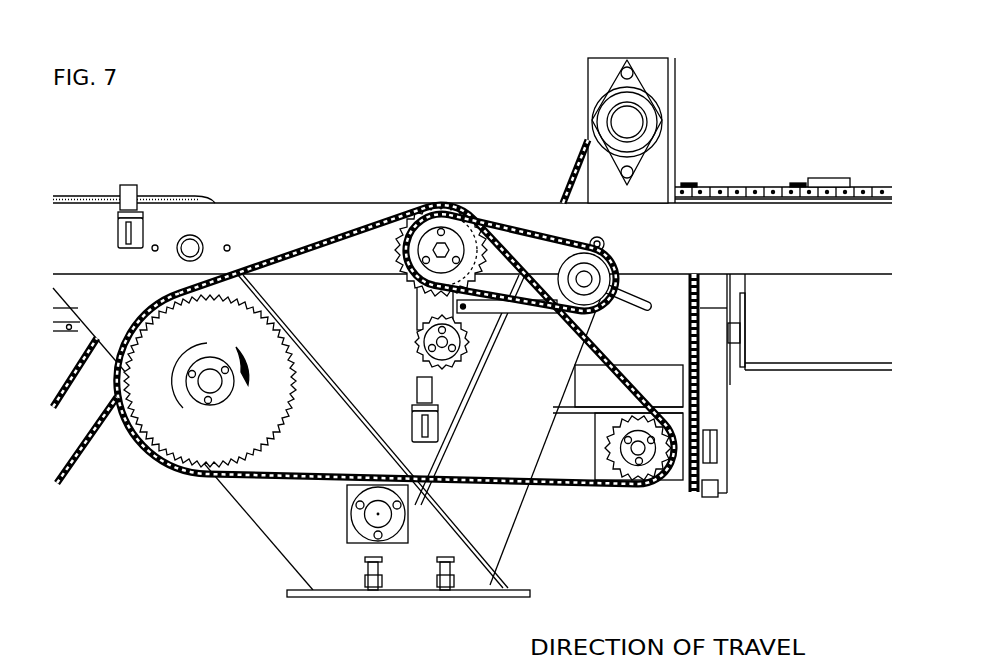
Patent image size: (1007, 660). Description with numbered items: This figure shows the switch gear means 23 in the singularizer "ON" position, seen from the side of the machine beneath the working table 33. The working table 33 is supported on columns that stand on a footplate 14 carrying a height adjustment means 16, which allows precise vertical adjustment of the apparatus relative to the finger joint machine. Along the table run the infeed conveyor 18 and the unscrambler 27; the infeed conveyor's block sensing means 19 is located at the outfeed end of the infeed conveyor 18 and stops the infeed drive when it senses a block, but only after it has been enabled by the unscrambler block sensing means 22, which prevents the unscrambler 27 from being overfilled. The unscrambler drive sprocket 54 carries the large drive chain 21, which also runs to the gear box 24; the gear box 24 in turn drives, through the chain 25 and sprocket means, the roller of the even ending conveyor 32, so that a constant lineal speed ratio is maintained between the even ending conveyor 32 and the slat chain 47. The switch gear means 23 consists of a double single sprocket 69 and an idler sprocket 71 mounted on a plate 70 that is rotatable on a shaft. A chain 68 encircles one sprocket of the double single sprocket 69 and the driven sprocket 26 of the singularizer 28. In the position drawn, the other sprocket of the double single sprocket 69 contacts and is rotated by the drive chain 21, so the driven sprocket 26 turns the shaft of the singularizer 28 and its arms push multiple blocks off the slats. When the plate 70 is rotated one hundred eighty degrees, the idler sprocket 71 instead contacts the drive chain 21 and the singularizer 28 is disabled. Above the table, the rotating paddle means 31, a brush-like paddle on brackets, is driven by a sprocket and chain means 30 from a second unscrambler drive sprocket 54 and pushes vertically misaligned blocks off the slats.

The footplate 14 is at (287, 600).
The height adjustment means 16 is at (367, 590).
The infeed conveyor 18 is at (88, 194).
The infeed conveyor's block sensing means 19 is at (142, 182).
The drive chain 21 is at (273, 483).
The unscrambler block sensing means 22 is at (413, 395).
The switch gear means 23 is at (438, 200).
The gear box 24 is at (670, 487).
The chain 25 is at (703, 393).
The driven sprocket 26 is at (580, 262).
The unscrambler 27 is at (318, 200).
The singularizer 28 is at (652, 302).
The chain 30 is at (568, 168).
The rotating paddle means 31 is at (583, 123).
The even ending conveyor 32 is at (840, 332).
The working table 33 is at (840, 236).
The slat chain 47 is at (827, 187).
The unscrambler drive sprocket 54 is at (223, 439).
The chain 68 is at (520, 227).
The double single sprocket 69 is at (402, 280).
The plate 70 is at (413, 317).
The idler sprocket 71 is at (413, 357).